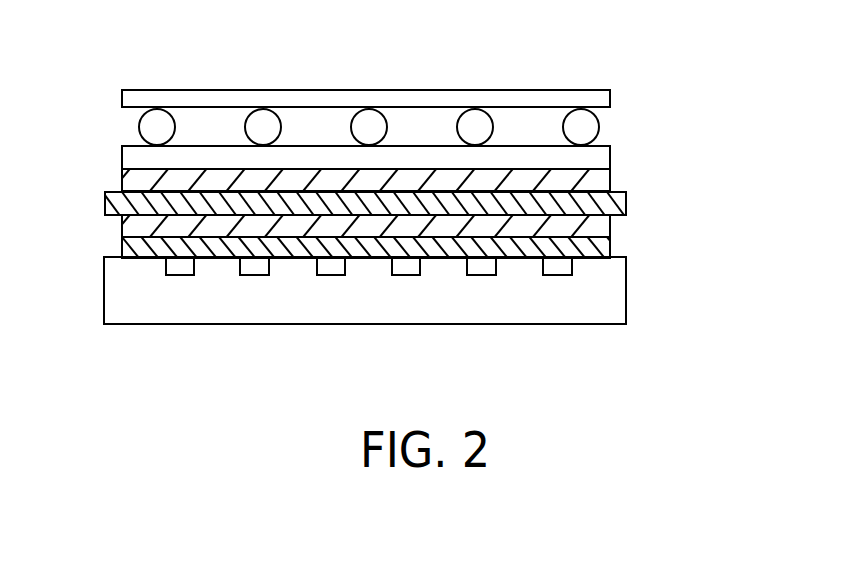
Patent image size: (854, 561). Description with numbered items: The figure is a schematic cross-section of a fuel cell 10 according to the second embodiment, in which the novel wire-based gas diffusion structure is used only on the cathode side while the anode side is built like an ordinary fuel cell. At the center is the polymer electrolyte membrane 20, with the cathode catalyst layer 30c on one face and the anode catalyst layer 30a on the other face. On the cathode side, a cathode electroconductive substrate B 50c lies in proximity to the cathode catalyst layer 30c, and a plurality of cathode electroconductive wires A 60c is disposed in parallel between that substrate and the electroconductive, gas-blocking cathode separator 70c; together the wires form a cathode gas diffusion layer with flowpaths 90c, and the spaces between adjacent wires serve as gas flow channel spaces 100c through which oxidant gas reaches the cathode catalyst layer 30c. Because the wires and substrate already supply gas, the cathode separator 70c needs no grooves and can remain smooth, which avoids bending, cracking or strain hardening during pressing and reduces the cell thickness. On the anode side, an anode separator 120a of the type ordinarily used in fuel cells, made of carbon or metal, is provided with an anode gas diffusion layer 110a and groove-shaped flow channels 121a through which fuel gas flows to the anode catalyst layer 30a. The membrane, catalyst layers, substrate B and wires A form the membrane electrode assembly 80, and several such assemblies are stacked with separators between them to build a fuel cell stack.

The fuel cell 10 is at (128, 37).
The polymer electrolyte membrane 20 is at (628, 202).
The anode catalyst layer 30a is at (122, 222).
The cathode catalyst layer 30c is at (122, 179).
The cathode electroconductive substrate B 50c is at (612, 157).
The cathode electroconductive wires A 60c is at (139, 128).
The cathode separator 70c is at (599, 85).
The membrane electrode assembly (MEA) 80 is at (771, 123).
The cathode gas diffusion layer with flowpaths 90c is at (705, 107).
The gas flow channel spaces 100c is at (318, 116).
The anode gas diffusion layer 110a is at (612, 245).
The anode separator 120a is at (611, 293).
The flow channel 121a is at (404, 268).